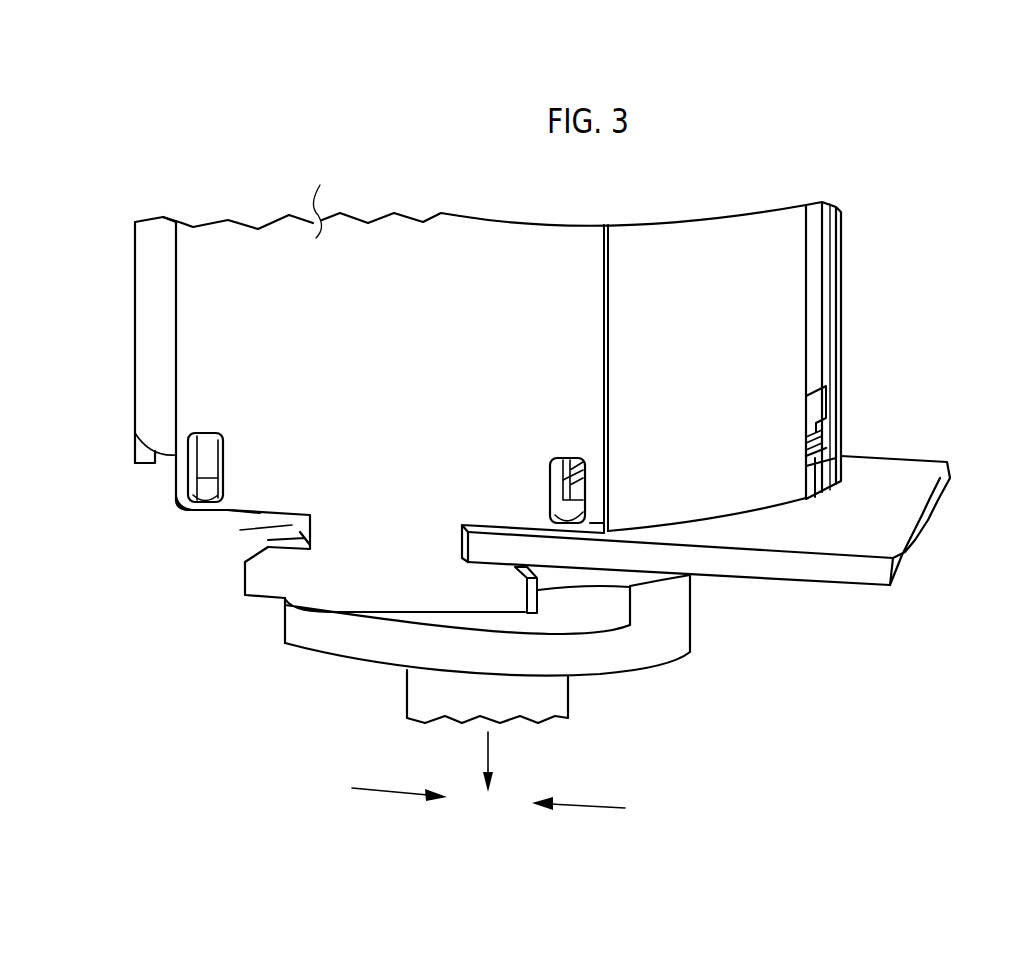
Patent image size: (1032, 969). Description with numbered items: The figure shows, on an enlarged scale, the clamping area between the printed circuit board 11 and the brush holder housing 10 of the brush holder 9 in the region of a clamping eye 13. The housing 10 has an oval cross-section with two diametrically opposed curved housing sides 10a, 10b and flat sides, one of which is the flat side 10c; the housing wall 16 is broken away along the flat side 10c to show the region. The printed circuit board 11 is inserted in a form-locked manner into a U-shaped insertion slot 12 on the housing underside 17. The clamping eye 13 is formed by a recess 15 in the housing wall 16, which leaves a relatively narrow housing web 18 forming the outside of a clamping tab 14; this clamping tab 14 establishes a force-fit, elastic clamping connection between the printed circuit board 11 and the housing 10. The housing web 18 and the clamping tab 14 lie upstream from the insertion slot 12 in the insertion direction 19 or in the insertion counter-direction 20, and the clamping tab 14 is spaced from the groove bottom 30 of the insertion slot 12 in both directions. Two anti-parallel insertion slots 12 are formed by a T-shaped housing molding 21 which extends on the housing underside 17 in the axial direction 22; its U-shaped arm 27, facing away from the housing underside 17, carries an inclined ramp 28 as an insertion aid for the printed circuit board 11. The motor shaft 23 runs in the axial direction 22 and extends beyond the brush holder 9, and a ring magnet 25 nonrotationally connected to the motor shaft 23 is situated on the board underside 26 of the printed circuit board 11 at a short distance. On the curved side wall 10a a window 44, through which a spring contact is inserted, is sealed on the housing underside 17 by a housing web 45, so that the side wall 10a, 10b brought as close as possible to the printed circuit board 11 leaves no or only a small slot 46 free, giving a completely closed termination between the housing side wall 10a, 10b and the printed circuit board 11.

The brush holder 9 is at (133, 288).
The brush holder housing 10 is at (798, 203).
The curved housing side 10a is at (803, 301).
The curved housing side 10b is at (133, 350).
The flat housing side 10c is at (323, 197).
The printed circuit board 11 is at (875, 573).
The U-shaped insertion slot 12 is at (228, 510).
The clamping eye 13 is at (200, 480).
The clamping tab 14 is at (193, 513).
The recess 15 is at (190, 445).
The housing wall 16 is at (524, 213).
The housing underside 17 is at (210, 511).
The housing web 18 is at (176, 503).
The insertion direction 19 is at (585, 808).
The insertion counter-direction 20 is at (388, 792).
The T-shaped housing molding 21 is at (305, 578).
The axial direction 22 is at (492, 748).
The motor shaft 23 is at (407, 690).
The ring magnet 25 is at (660, 615).
The board underside 26 is at (812, 586).
The U-shaped arm 27 is at (262, 578).
The inclined ramp 28 is at (248, 553).
The groove bottom 30 is at (292, 525).
The window 44 is at (835, 440).
The housing web 45 is at (836, 470).
The slot 46 is at (836, 485).